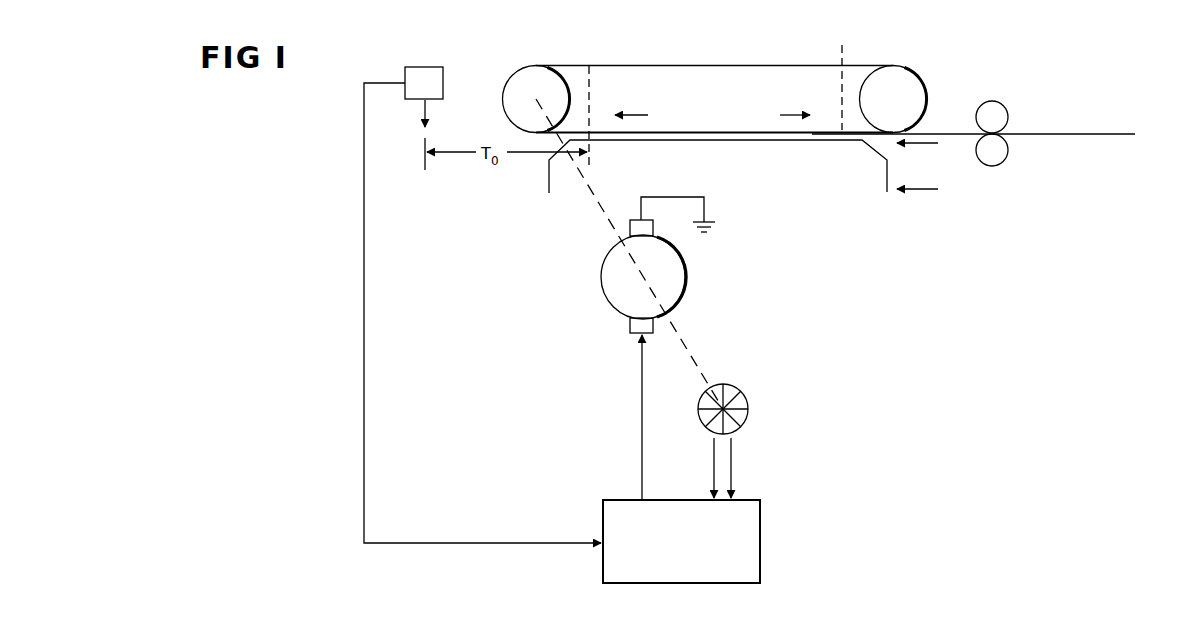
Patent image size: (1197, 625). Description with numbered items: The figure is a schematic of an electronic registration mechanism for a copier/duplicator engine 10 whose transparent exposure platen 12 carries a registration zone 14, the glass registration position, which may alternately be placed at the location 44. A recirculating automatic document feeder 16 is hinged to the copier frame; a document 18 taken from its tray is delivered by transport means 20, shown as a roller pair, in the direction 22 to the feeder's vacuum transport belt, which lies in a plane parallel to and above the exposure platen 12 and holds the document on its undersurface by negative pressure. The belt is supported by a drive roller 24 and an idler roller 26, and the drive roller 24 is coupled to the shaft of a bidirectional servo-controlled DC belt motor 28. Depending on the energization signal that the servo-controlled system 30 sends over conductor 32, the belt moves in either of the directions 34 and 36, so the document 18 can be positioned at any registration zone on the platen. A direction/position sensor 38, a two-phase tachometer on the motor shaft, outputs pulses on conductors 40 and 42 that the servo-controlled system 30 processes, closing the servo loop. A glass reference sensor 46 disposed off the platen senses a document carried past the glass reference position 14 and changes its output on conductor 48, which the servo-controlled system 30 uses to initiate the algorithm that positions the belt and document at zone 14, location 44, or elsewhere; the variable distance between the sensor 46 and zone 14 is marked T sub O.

The copier/duplicator engine 10 is at (930, 190).
The exposure platen 12 is at (748, 141).
The registration zone 14 is at (590, 151).
The recirculating automatic document feeder 16 is at (675, 65).
The document 18 is at (1050, 134).
The transport means 20 is at (1004, 134).
The document transport direction 22 is at (930, 144).
The drive roller 24 is at (533, 72).
The idler roller 26 is at (893, 72).
The belt motor 28 is at (686, 272).
The servo-controlled system 30 is at (668, 579).
The conductor 32 is at (640, 376).
The belt direction arrow 34 is at (645, 115).
The belt direction arrow 36 is at (783, 115).
The direction/position sensor 38 is at (748, 401).
The conductor 40 is at (713, 453).
The conductor 42 is at (732, 453).
The alternate registration zone 44 is at (846, 42).
The glass reference sensor 46 is at (430, 67).
The conductor 48 is at (364, 322).